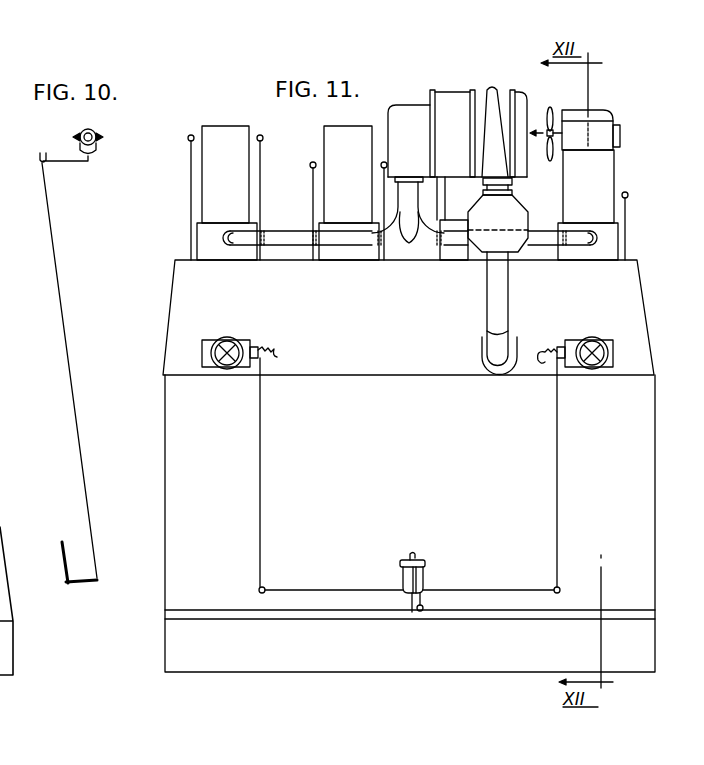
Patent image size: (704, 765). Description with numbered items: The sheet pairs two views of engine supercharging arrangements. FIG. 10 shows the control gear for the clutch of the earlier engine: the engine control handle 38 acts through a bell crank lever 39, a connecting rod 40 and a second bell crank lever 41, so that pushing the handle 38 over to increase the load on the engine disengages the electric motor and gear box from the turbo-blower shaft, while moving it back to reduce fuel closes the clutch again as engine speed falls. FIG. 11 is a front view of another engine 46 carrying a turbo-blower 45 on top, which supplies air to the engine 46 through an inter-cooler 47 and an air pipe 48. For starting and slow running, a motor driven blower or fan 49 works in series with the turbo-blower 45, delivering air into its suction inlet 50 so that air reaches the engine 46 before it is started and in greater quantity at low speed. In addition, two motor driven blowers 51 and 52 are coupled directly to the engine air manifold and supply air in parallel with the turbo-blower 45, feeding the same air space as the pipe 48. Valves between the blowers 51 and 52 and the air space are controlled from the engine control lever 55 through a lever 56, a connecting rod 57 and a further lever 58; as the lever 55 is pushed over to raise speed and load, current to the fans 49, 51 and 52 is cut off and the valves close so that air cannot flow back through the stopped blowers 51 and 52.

In FIG. 10, the engine control handle 38 is at (62, 558).
In FIG. 10, the bell crank lever 39 is at (83, 586).
In FIG. 10, the connecting rod 40 is at (52, 244).
In FIG. 10, the bell crank lever 41 is at (66, 163).
In FIG. 11, the turbo-blower 45 is at (443, 140).
In FIG. 11, the engine 46 is at (628, 492).
In FIG. 11, the inter-cooler 47 is at (498, 215).
In FIG. 11, the air pipe 48 is at (502, 306).
In FIG. 11, the motor driven blower or fan 49 is at (600, 120).
In FIG. 11, the suction inlet 50 is at (520, 93).
In FIG. 11, the motor driven fan or blower 51 is at (578, 335).
In FIG. 11, the motor driven fan or blower 52 is at (225, 338).
In FIG. 11, the engine control lever 55 is at (403, 580).
In FIG. 11, the lever 56 is at (575, 585).
In FIG. 11, the connecting rod 57 is at (260, 488).
In FIG. 11, the lever 58 is at (407, 347).